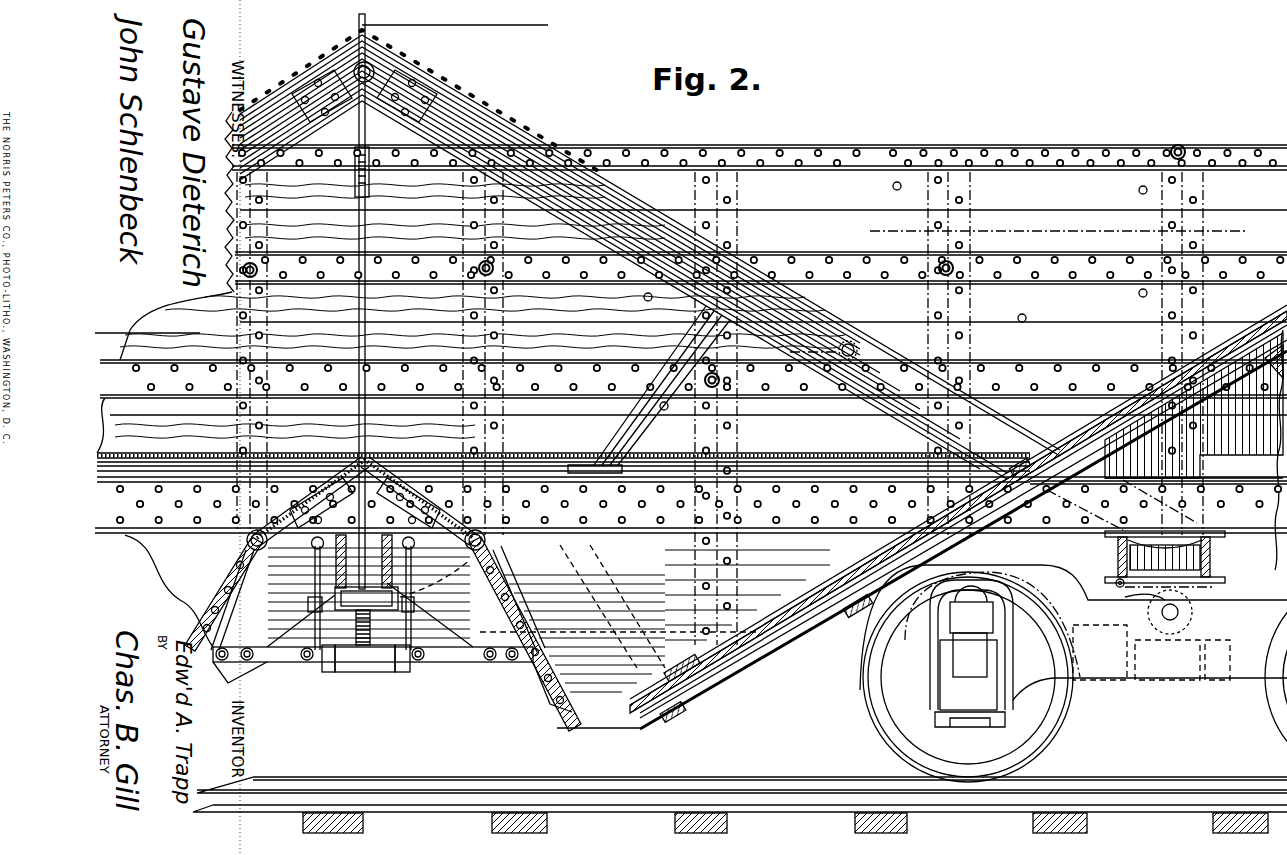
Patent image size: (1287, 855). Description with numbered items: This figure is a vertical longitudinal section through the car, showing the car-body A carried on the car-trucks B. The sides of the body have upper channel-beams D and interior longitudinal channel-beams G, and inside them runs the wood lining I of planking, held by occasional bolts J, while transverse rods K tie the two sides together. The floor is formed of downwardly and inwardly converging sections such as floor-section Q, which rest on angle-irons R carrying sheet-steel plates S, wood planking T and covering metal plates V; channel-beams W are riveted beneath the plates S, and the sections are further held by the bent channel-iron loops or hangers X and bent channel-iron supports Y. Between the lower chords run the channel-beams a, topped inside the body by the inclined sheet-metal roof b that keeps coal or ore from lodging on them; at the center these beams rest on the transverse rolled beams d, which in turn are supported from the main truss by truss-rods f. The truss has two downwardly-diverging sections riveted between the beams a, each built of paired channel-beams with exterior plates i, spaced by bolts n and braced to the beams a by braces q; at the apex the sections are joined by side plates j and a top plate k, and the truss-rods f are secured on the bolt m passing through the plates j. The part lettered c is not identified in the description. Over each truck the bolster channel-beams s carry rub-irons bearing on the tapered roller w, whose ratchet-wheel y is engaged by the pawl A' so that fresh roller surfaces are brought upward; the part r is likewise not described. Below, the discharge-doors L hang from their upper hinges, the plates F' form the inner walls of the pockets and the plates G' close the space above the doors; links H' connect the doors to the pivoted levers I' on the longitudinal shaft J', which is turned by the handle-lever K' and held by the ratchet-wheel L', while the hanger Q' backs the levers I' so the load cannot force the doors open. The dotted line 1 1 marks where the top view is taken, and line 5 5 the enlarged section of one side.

The section line 1 1 is at (323, 176).
The section line 5 5 is at (1059, 229).
The car-body A is at (759, 145).
The car-trucks B is at (1073, 673).
The upper channel-beams D is at (1040, 150).
The interior longitudinal channel-beams G is at (693, 325).
The wood lining I is at (698, 397).
The bolts J is at (877, 306).
The transverse rods K is at (699, 249).
The bent channel-iron supports Y is at (1272, 376).
The channel-beams a is at (684, 497).
The inclined roof b is at (513, 452).
The roof brace c is at (623, 263).
The parallel rolled beams d is at (364, 561).
The truss-rods f is at (367, 346).
The exterior plates i is at (975, 440).
The side plates j is at (364, 96).
The top plate k is at (385, 45).
The bolt m is at (353, 75).
The bolts n is at (823, 344).
The braces q is at (668, 341).
The gear r is at (1170, 612).
The transverse channel-beams s is at (1117, 550).
The tapered roller w is at (1182, 587).
The ratchet-wheel y is at (1140, 615).
The floor-section Q is at (1080, 517).
The angle-irons R is at (600, 734).
The sheet-steel plates S is at (690, 712).
The wood planking T is at (620, 735).
The metal plates V is at (662, 672).
The channel-beams W is at (812, 630).
The bent channel-iron loops or hangers X is at (857, 616).
The discharge-doors L is at (380, 636).
The pawl A' is at (1109, 585).
The plates F' is at (391, 629).
The plates G' is at (366, 486).
The links H' is at (373, 673).
The pivoted levers I' is at (393, 643).
The longitudinal shaft J' is at (435, 578).
The handle-lever K' is at (349, 593).
The ratchet-wheel L' is at (301, 621).
The hanger Q' is at (366, 643).